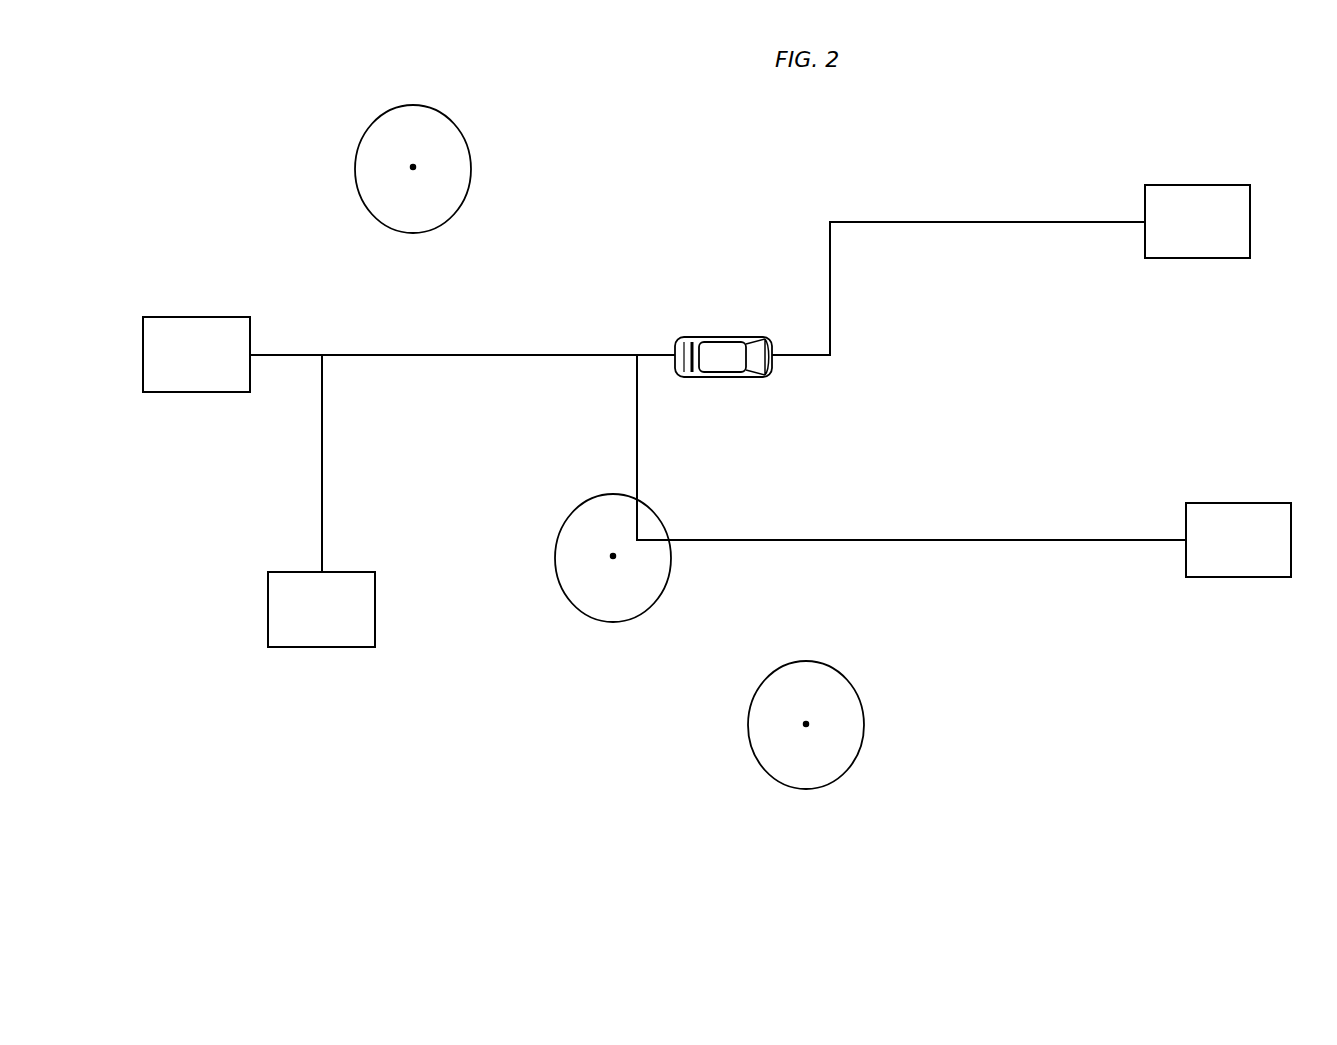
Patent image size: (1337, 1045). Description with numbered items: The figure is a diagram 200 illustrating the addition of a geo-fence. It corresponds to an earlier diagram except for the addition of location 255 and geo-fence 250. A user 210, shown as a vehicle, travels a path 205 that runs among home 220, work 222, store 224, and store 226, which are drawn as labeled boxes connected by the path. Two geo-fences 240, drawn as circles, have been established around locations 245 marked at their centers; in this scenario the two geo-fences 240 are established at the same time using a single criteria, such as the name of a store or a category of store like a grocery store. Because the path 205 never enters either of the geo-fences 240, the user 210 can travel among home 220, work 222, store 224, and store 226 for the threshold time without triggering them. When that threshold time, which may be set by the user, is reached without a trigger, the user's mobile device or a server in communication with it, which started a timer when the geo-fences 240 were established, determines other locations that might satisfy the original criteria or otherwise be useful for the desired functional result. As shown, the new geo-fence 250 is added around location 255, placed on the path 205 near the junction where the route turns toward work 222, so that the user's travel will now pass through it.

The diagram 200 is at (410, 786).
The path 205 is at (417, 353).
The user 210 is at (733, 336).
The home 220 is at (196, 392).
The work 222 is at (1240, 577).
The store 224 is at (1198, 258).
The store 226 is at (322, 647).
The geo-fences 240 is at (470, 146).
The locations 245 is at (413, 159).
The geo-fence 250 is at (668, 516).
The location 255 is at (613, 549).